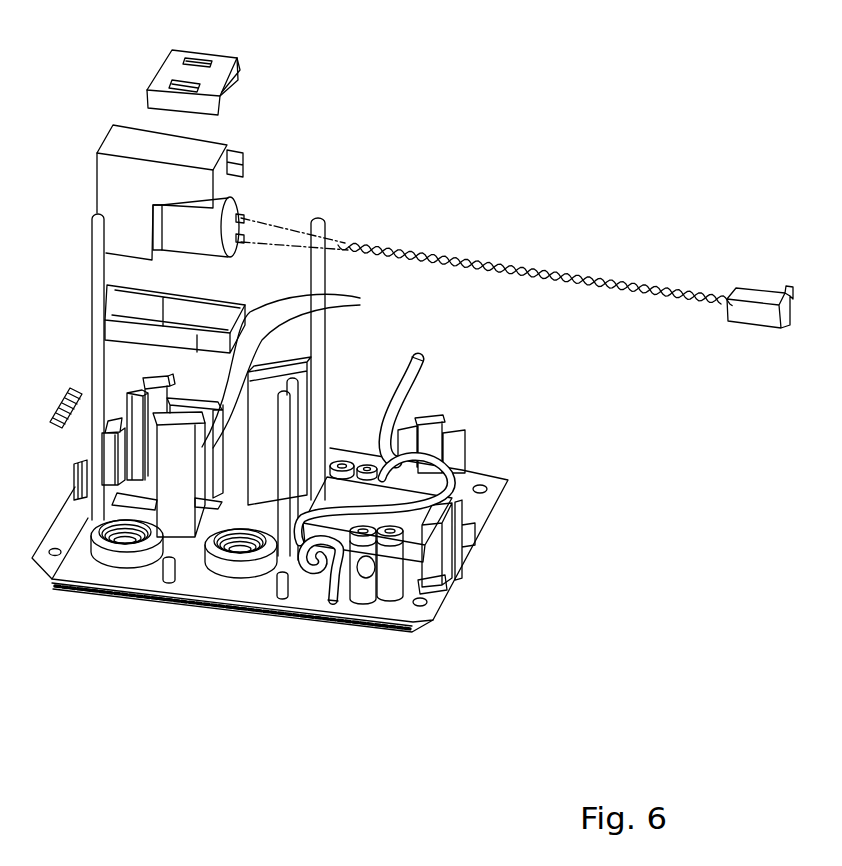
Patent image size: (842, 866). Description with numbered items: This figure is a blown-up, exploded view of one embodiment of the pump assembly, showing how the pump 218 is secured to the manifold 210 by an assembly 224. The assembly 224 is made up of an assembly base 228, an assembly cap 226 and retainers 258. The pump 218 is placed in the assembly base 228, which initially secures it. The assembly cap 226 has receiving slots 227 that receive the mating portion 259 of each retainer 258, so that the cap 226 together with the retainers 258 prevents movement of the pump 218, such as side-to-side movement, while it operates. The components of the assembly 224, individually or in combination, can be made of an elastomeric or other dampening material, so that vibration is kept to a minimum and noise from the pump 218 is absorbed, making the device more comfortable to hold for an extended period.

The manifold 210 is at (147, 580).
The pump 218 is at (228, 145).
The assembly 224 is at (470, 228).
The assembly cap 226 is at (240, 69).
The receiving slots 227 is at (203, 58).
The assembly base 228 is at (113, 330).
The retainers 258 is at (173, 463).
The mating portion 259 is at (163, 381).